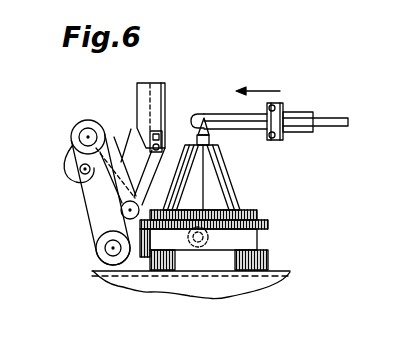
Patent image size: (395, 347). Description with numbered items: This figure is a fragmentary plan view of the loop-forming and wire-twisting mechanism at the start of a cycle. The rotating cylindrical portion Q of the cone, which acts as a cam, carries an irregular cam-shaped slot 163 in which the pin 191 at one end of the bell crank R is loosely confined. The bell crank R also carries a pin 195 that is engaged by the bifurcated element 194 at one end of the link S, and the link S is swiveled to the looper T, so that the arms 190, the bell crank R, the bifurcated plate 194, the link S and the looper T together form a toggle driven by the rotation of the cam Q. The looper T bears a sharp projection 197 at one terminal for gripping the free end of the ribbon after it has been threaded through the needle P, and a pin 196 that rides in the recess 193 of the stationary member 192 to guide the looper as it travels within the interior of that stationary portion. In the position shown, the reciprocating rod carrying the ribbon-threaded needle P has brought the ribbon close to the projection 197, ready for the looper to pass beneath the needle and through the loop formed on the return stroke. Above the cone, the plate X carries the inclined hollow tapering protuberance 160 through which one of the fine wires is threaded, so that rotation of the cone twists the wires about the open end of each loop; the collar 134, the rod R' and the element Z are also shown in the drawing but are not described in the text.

The stationary member 192 is at (156, 101).
The recess 193 is at (187, 107).
The pin 196 is at (178, 117).
The sharp projection 197 is at (182, 123).
The bifurcated element 194 is at (64, 129).
The pin 195 is at (61, 172).
The arms 190 is at (106, 276).
The pin 191 is at (196, 279).
The cam-shaped slot 163 is at (209, 291).
The collar 134 is at (293, 102).
The tubular tapering protuberance 160 is at (248, 141).
The looper T is at (136, 145).
The link S is at (117, 166).
The bell crank R is at (87, 199).
The cylindrical portion Q is at (225, 213).
The needle P is at (270, 103).
The rod R' is at (317, 109).
The plate X is at (222, 139).
The cone Z is at (211, 177).